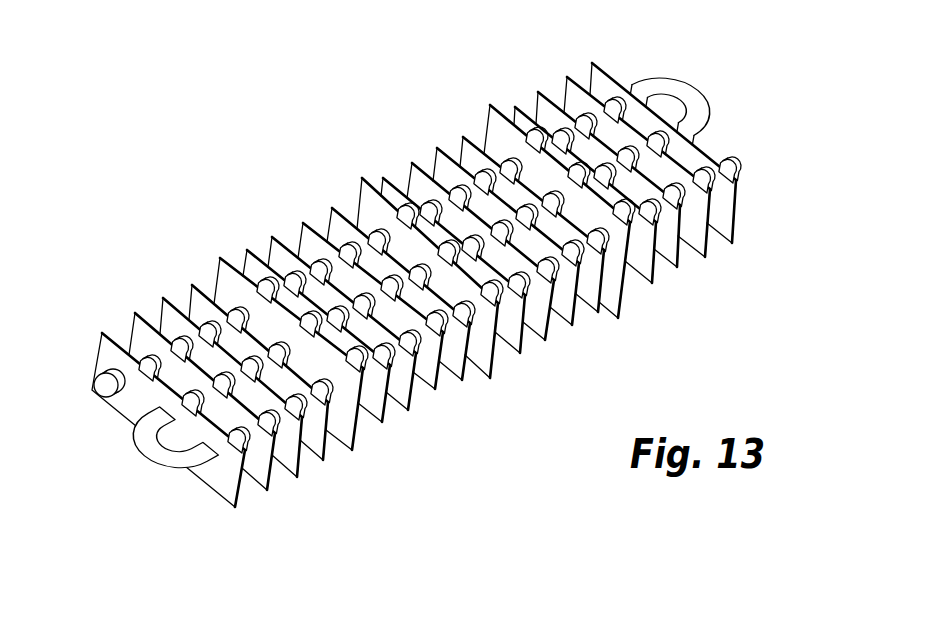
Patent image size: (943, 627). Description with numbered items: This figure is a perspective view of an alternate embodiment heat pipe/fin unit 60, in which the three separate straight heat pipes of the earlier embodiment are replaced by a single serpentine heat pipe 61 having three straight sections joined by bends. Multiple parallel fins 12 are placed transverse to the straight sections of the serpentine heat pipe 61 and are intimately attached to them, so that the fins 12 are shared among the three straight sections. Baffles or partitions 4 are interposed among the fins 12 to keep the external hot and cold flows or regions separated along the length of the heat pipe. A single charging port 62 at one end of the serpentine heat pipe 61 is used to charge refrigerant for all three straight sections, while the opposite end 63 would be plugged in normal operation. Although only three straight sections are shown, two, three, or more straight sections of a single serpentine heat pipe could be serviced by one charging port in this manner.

The heat pipe/fin unit 60 is at (273, 206).
The fins 12 is at (119, 328).
The baffles or partitions 4 is at (352, 450).
The serpentine heat pipe 61 is at (173, 480).
The charging port 62 is at (96, 391).
The end 63 is at (742, 166).